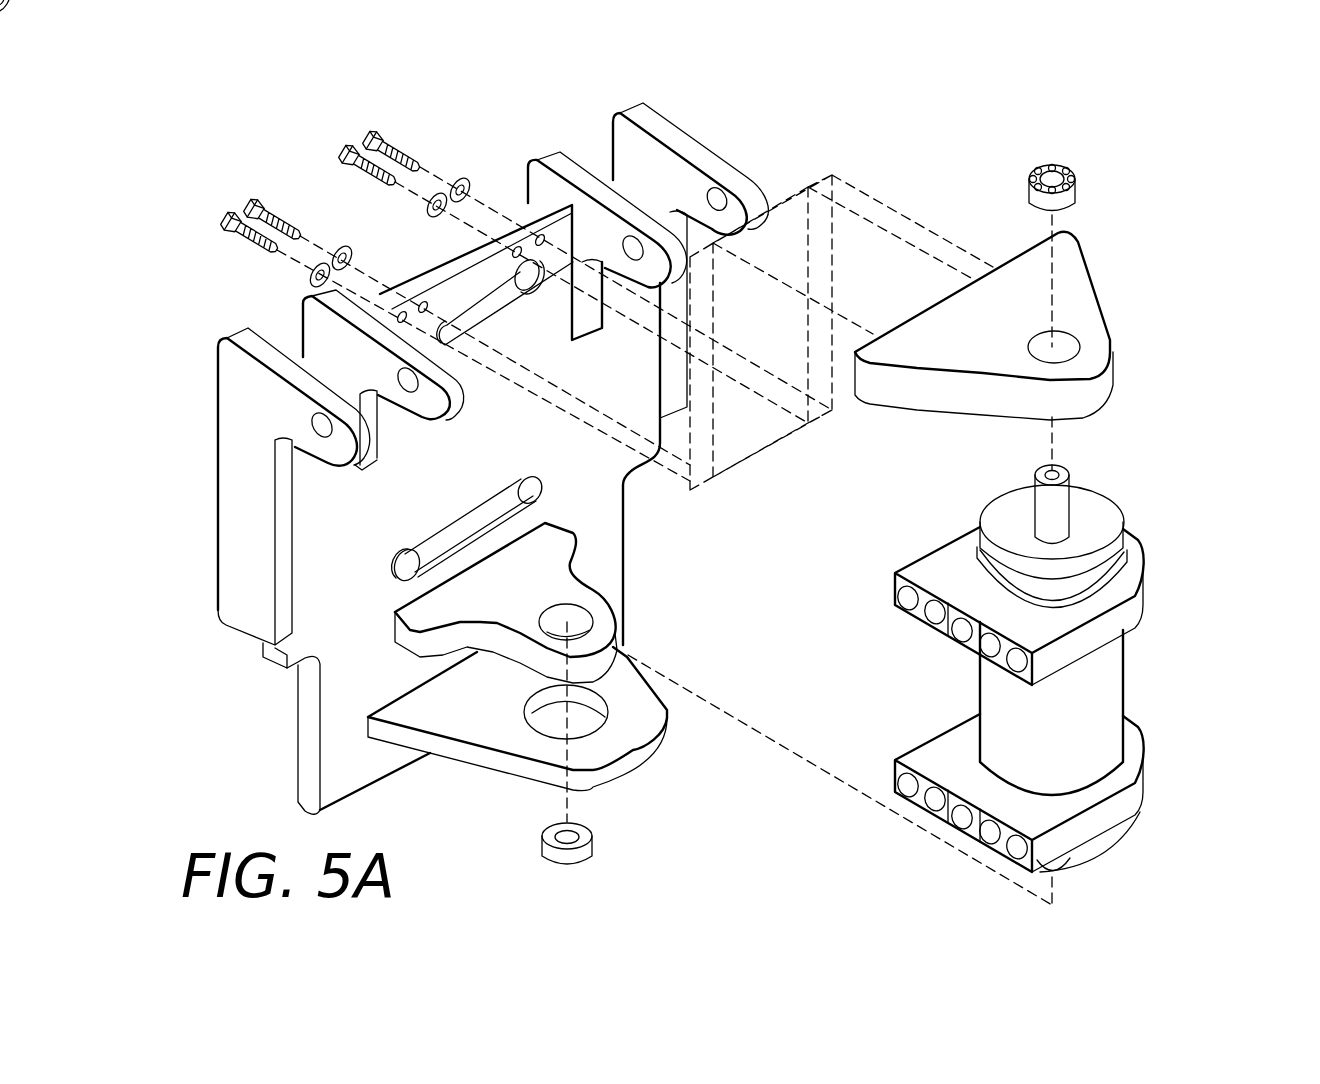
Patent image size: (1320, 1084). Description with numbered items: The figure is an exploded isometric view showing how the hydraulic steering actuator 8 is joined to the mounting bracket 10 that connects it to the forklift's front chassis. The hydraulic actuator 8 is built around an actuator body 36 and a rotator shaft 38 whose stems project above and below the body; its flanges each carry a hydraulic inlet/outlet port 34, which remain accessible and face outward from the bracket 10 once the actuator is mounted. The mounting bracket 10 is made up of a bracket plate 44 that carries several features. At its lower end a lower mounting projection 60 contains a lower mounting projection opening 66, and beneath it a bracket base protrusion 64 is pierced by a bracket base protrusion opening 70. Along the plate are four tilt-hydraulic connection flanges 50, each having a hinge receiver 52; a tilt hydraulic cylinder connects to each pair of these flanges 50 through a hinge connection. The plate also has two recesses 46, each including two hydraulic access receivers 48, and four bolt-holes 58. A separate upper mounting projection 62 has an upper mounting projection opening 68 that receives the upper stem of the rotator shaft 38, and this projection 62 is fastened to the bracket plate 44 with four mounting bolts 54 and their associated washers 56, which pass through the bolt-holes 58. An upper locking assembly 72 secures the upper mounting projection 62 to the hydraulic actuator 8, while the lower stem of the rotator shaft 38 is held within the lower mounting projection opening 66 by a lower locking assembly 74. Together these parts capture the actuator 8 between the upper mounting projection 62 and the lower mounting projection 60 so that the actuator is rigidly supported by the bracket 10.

The hydraulic actuator 8 is at (1213, 552).
The mounting bracket 10 is at (170, 251).
The hydraulic inlet/outlet port 34 is at (960, 627).
The actuator body 36 is at (1125, 705).
The rotator shaft 38 is at (1055, 473).
The bracket plate 44 is at (378, 537).
The recess 46 is at (490, 309).
The hydraulic access receiver 48 is at (527, 282).
The tilt-hydraulic connection flange 50 is at (255, 333).
The hinge receiver 52 is at (312, 423).
The mounting bolt 54 is at (372, 138).
The washer 56 is at (452, 186).
The bolt-hole 58 is at (422, 303).
The lower mounting projection 60 is at (618, 645).
The upper mounting projection 62 is at (1096, 293).
The bracket base protrusion 64 is at (660, 700).
The lower mounting projection opening 66 is at (557, 612).
The upper mounting projection opening 68 is at (1065, 347).
The bracket base protrusion opening 70 is at (545, 720).
The upper locking assembly 72 is at (1070, 180).
The lower locking assembly 74 is at (590, 840).